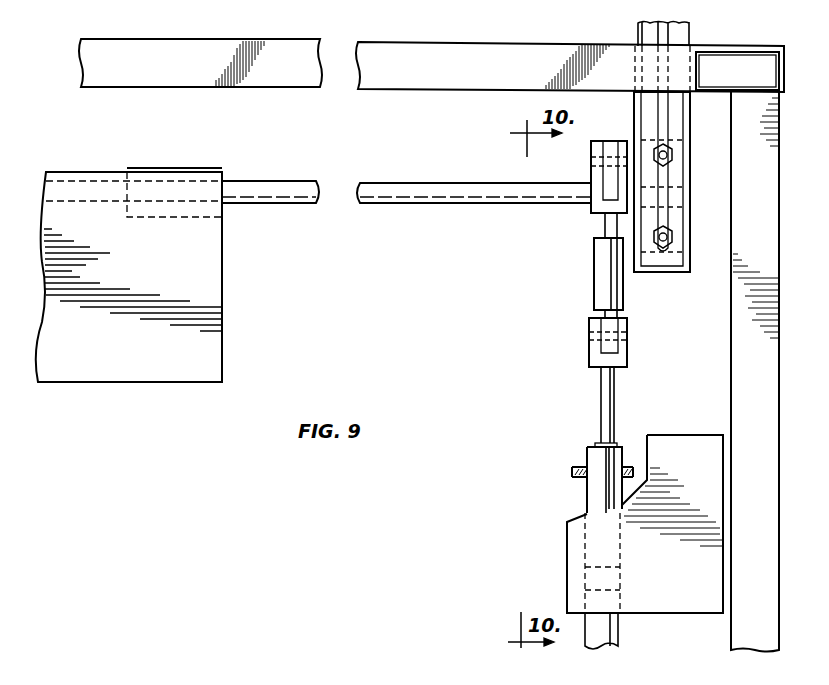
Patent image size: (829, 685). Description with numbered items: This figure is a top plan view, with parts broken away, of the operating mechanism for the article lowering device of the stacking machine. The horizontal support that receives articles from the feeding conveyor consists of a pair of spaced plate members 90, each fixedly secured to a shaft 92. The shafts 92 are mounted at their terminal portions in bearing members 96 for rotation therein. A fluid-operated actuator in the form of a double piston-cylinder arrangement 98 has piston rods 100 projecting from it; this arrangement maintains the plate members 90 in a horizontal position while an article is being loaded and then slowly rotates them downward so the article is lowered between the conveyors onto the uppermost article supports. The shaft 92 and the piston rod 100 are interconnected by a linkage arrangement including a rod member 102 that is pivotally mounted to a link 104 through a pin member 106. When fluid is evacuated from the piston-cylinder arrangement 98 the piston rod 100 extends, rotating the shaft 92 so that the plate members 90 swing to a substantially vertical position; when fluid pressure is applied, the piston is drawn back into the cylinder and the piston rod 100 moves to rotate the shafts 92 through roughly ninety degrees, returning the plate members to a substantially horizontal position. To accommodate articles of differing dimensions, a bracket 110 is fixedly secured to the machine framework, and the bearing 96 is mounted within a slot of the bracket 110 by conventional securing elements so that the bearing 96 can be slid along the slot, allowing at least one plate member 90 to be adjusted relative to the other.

The plate member 90 is at (215, 256).
The shaft 92 is at (430, 202).
The bearing member 96 is at (690, 157).
The piston-cylinder arrangement 98 is at (587, 501).
The piston rod 100 is at (600, 403).
The rod member 102 is at (596, 270).
The link 104 is at (610, 141).
The pin member 106 is at (591, 158).
The bracket 110 is at (636, 34).